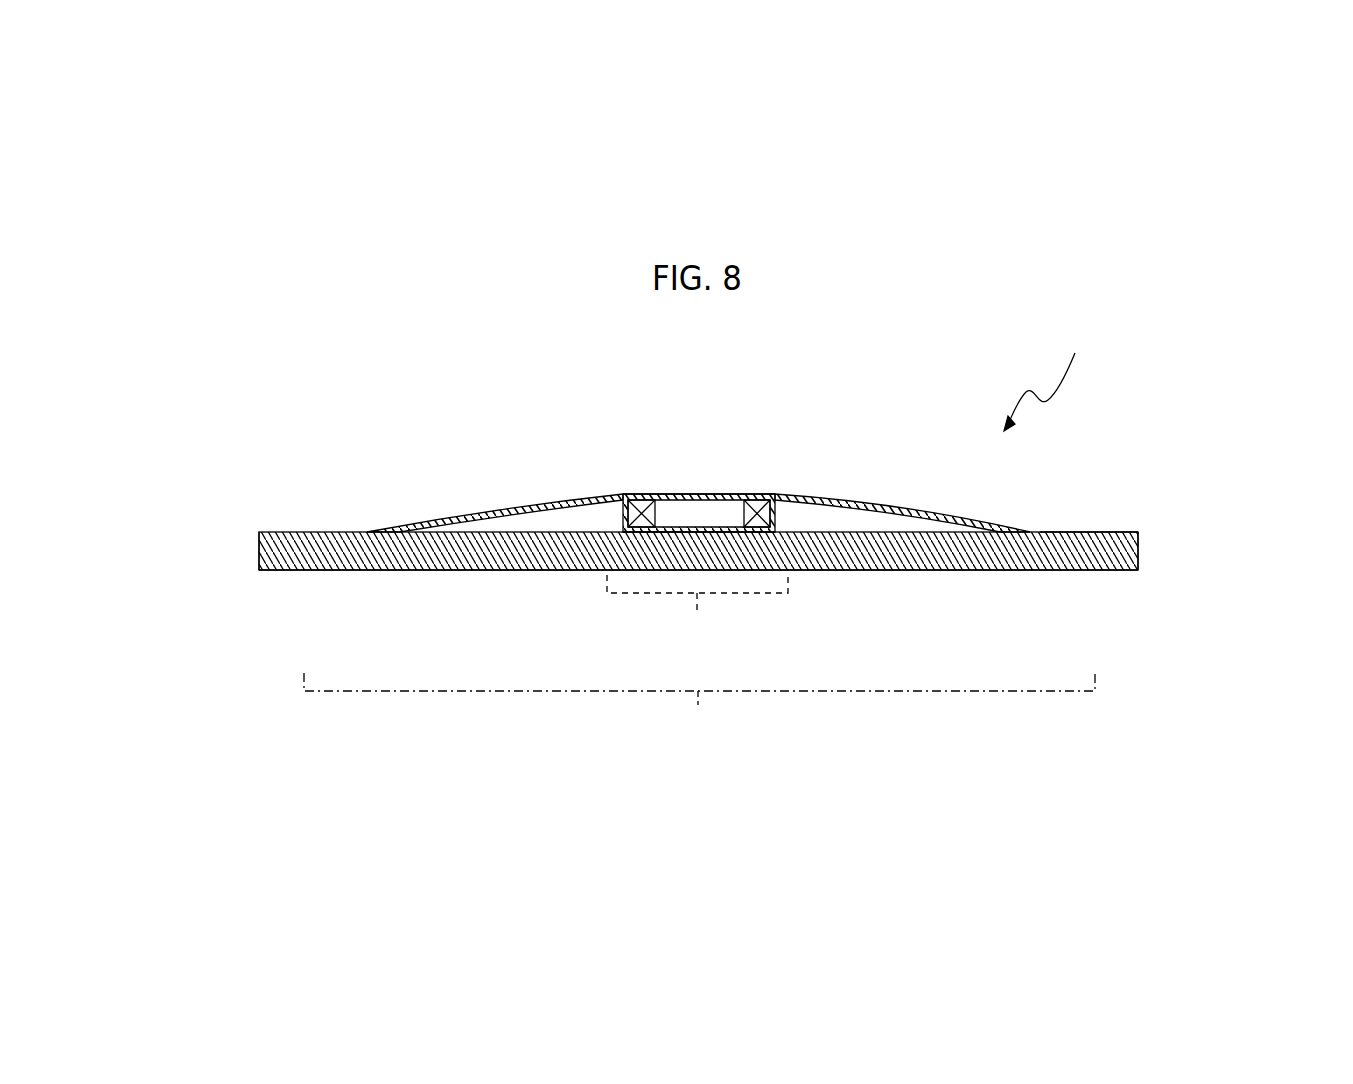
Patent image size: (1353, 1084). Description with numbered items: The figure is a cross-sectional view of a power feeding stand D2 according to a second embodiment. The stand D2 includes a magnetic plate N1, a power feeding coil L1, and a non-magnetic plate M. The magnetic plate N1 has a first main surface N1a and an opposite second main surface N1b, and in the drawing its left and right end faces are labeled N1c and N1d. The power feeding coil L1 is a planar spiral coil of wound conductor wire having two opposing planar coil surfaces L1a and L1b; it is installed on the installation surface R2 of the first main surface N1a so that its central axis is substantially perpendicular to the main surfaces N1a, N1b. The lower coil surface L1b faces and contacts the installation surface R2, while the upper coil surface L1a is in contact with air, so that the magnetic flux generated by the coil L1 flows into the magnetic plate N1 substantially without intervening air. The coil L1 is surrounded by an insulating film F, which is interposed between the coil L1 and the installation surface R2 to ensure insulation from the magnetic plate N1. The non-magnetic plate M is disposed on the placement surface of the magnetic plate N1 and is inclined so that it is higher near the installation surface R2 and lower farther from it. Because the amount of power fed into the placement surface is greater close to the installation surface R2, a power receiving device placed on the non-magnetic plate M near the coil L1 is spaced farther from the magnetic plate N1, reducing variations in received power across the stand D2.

The magnetic plate N1 is at (1048, 532).
The first main surface N1a is at (1120, 532).
The second main surface N1b is at (1117, 572).
The left end face of plate N1c is at (259, 553).
The right end face of plate N1d is at (1142, 552).
The non-magnetic plate M is at (524, 506).
The insulating film F is at (635, 495).
The power feeding coil L1 is at (717, 516).
The coil surface L1a is at (690, 495).
The coil surface L1b is at (733, 532).
The power feeding stand D2 is at (1050, 374).
The installation surface R2 is at (697, 615).